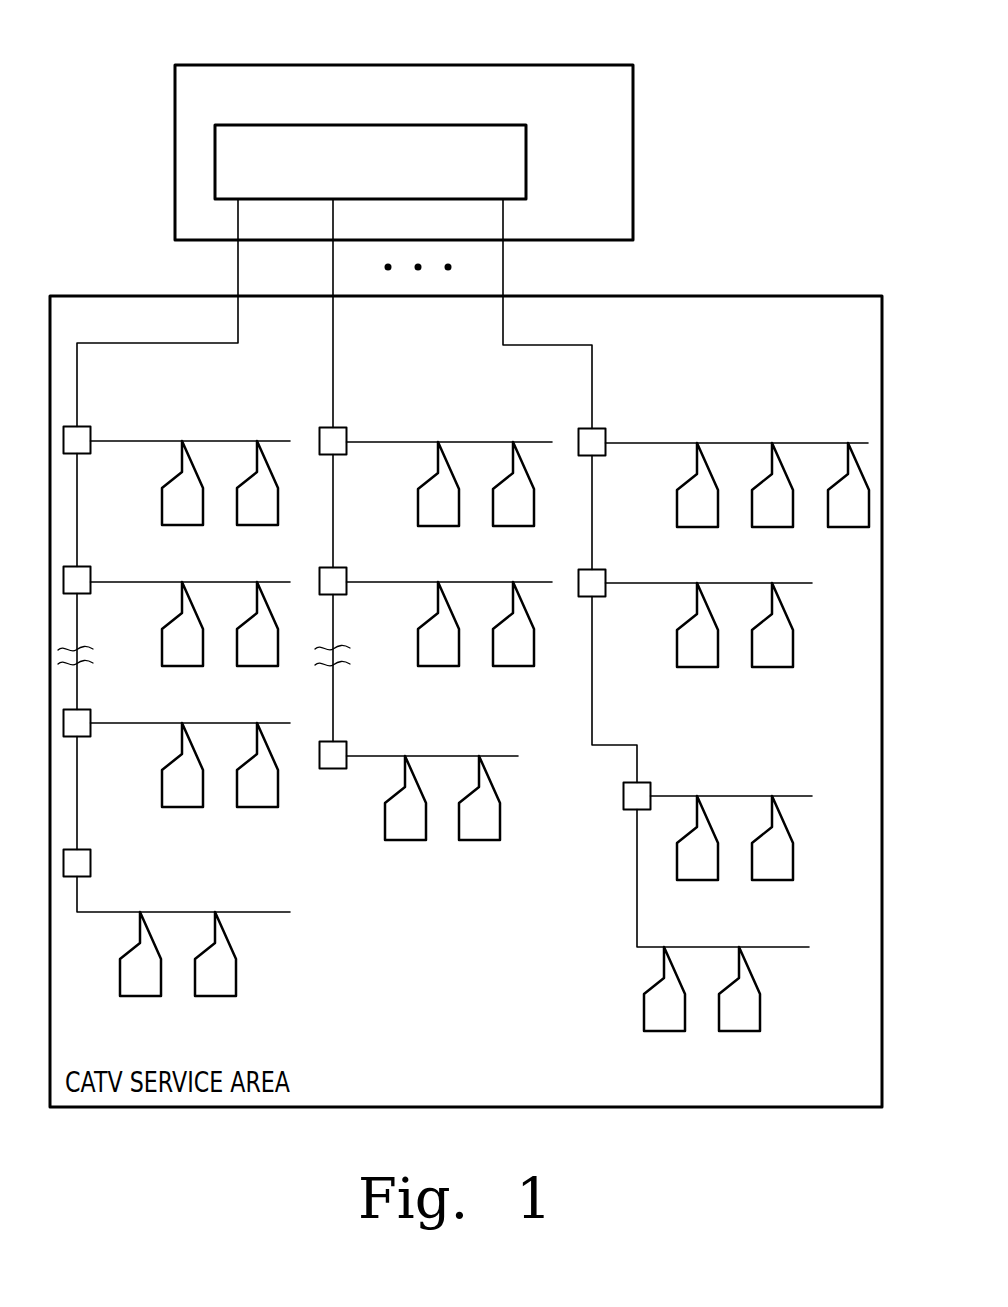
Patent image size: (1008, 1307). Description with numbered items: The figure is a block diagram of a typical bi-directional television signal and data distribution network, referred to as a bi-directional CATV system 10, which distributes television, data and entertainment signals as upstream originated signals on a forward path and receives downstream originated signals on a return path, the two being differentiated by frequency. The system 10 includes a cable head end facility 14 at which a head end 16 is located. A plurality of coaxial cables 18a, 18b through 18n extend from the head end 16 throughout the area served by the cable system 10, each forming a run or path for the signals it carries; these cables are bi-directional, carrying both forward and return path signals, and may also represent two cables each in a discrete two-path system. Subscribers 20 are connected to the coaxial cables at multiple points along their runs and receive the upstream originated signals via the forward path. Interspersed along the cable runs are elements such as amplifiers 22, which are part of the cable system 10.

The bi-directional CATV system 10 is at (725, 130).
The cable head end facility 14 is at (598, 65).
The head end 16 is at (527, 151).
The coaxial cable 18a is at (235, 268).
The coaxial cable 18b is at (329, 268).
The coaxial cable 18n is at (504, 268).
The subscribers 20 is at (186, 525).
The amplifiers 22 is at (90, 427).